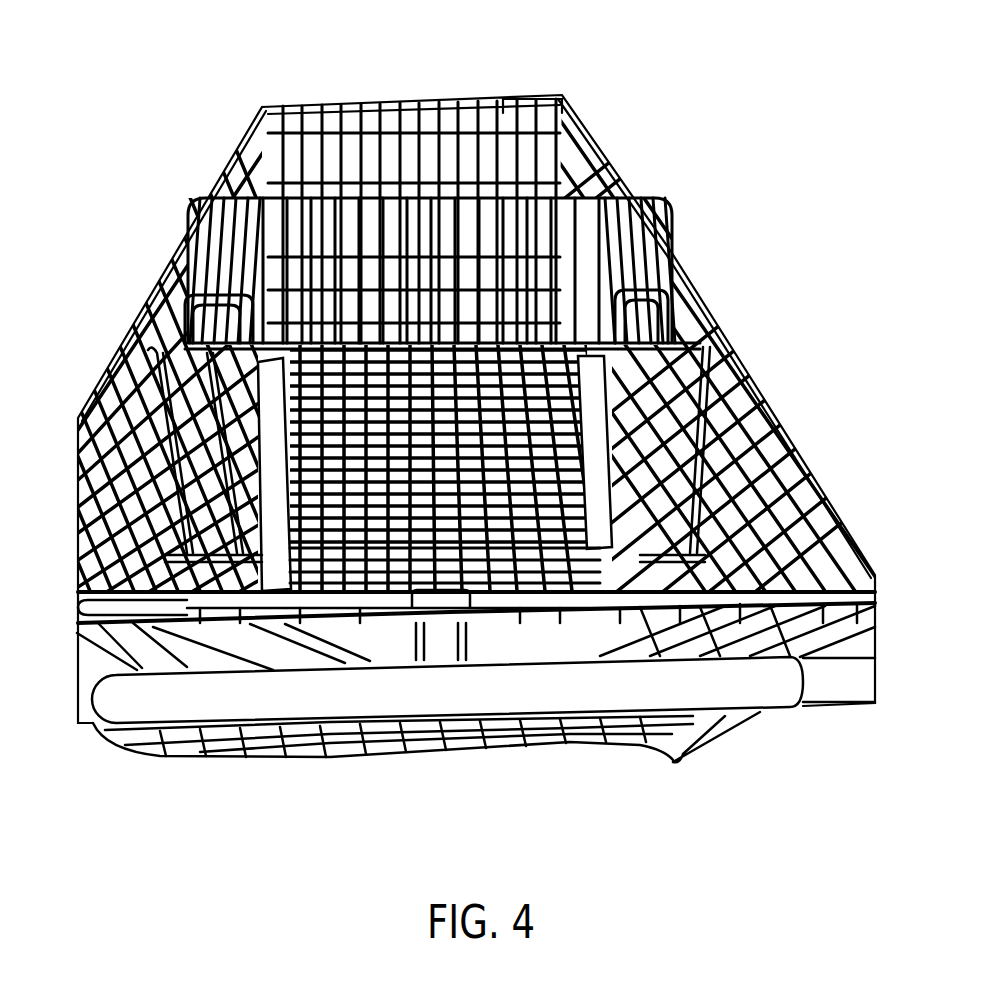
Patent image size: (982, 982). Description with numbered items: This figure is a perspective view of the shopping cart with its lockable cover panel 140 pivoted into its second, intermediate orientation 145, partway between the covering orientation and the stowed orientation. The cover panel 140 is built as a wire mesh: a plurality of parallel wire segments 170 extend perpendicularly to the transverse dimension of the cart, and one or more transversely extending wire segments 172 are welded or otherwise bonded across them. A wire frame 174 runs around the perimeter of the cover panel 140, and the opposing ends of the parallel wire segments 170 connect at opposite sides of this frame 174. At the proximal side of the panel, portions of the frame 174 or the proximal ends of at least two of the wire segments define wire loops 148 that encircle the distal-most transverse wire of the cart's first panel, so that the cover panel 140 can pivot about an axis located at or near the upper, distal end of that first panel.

The intermediate orientation 145 is at (150, 95).
The wire frame 174 is at (480, 160).
The cover panel 140 is at (190, 205).
The parallel wire segments 170 is at (190, 250).
The wire loops 148 is at (140, 327).
The transversely extending wire segments 172 is at (352, 548).